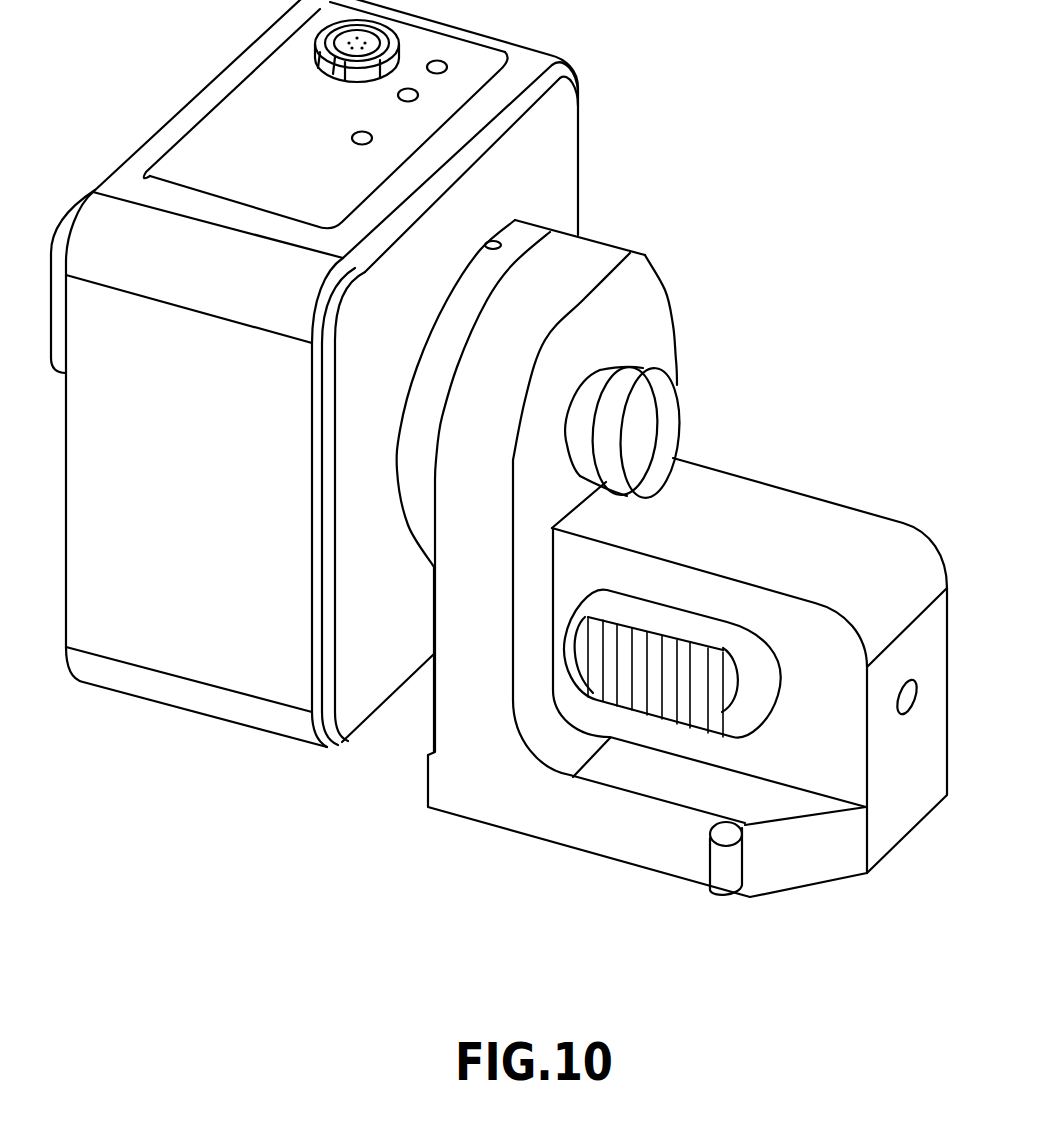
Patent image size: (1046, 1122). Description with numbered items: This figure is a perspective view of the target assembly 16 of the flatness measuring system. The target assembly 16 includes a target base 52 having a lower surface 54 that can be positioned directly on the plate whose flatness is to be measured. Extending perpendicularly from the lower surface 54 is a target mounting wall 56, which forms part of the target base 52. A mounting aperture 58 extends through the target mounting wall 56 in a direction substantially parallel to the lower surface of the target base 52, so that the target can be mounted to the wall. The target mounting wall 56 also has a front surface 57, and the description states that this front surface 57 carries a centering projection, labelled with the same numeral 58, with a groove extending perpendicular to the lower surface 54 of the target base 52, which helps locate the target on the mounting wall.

The target assembly 16 is at (668, 83).
The target base 52 is at (837, 494).
The lower surface 54 is at (531, 835).
The target mounting wall 56 is at (652, 288).
The front surface 57 is at (433, 723).
The mounting aperture 58 is at (583, 382).